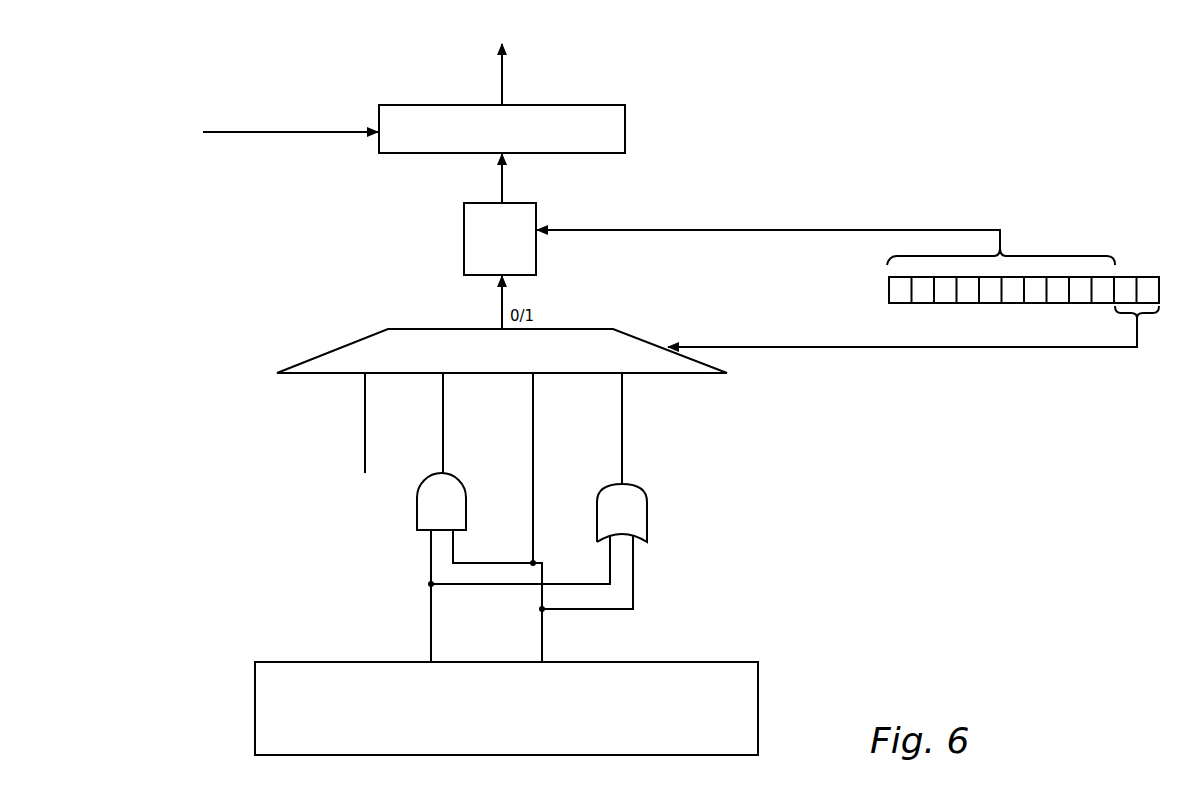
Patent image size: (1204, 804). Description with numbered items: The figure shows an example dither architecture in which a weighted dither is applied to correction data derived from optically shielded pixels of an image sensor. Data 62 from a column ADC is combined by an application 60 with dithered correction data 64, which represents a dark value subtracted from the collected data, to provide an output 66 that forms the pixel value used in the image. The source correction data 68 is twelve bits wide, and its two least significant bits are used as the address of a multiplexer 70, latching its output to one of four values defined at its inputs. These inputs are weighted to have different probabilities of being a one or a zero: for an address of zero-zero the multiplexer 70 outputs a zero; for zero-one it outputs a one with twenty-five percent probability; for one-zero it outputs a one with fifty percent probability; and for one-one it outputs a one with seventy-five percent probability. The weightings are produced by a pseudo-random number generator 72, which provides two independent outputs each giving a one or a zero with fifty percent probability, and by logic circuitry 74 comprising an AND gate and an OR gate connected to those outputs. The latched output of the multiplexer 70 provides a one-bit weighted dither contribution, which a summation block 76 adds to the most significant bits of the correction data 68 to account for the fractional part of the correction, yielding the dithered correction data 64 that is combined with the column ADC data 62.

The application 60 is at (600, 117).
The data from a column ADC 62 is at (280, 132).
The dithered correction data 64 is at (500, 188).
The output 66 is at (497, 78).
The source correction data 68 is at (1145, 277).
The multiplexer (MUX) 70 is at (663, 374).
The pseudo-random number generator 72 is at (743, 697).
The logic circuitry 74 is at (689, 546).
The summation block 76 is at (464, 255).